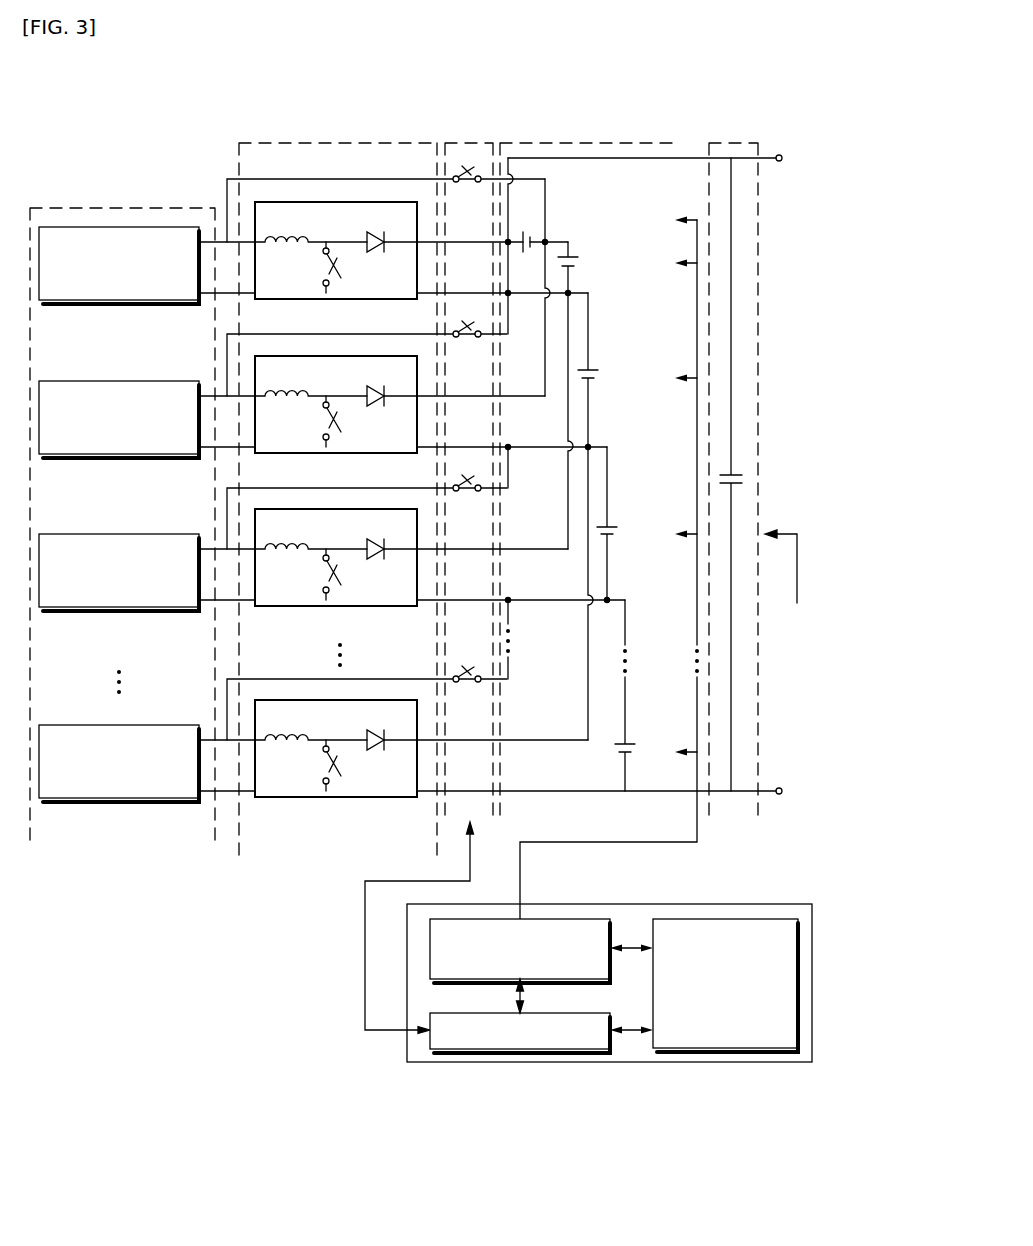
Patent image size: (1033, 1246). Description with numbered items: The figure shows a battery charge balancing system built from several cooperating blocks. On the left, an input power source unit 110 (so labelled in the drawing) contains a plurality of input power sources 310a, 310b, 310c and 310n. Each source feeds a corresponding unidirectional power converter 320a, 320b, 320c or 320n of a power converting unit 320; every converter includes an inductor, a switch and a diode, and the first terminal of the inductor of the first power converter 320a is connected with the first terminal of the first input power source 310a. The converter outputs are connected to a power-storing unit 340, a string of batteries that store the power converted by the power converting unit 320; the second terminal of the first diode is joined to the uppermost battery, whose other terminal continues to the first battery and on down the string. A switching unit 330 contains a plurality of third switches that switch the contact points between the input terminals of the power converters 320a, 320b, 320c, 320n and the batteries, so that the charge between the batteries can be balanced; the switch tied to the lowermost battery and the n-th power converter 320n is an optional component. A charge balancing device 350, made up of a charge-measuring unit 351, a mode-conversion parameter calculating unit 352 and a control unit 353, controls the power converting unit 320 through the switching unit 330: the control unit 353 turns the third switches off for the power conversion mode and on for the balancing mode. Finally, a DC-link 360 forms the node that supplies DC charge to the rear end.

The input power source unit 110 is at (134, 208).
The first input power source 310a is at (140, 302).
The input power source 310b is at (140, 456).
The input power source 310c is at (140, 609).
The input power source 310n is at (140, 800).
The power converting unit 320 is at (344, 142).
The first power converter 320a is at (328, 300).
The second power converter 320b is at (328, 454).
The third power converter 320c is at (328, 607).
The n-th power converter 320n is at (328, 798).
The switching unit 330 is at (468, 142).
The power-storing unit 340 is at (604, 142).
The charge balancing device 350 is at (748, 903).
The charge-measuring unit 351 is at (590, 917).
The mode-conversion parameter calculating unit 352 is at (722, 1053).
The control unit 353 is at (518, 1053).
The DC-link 360 is at (734, 142).